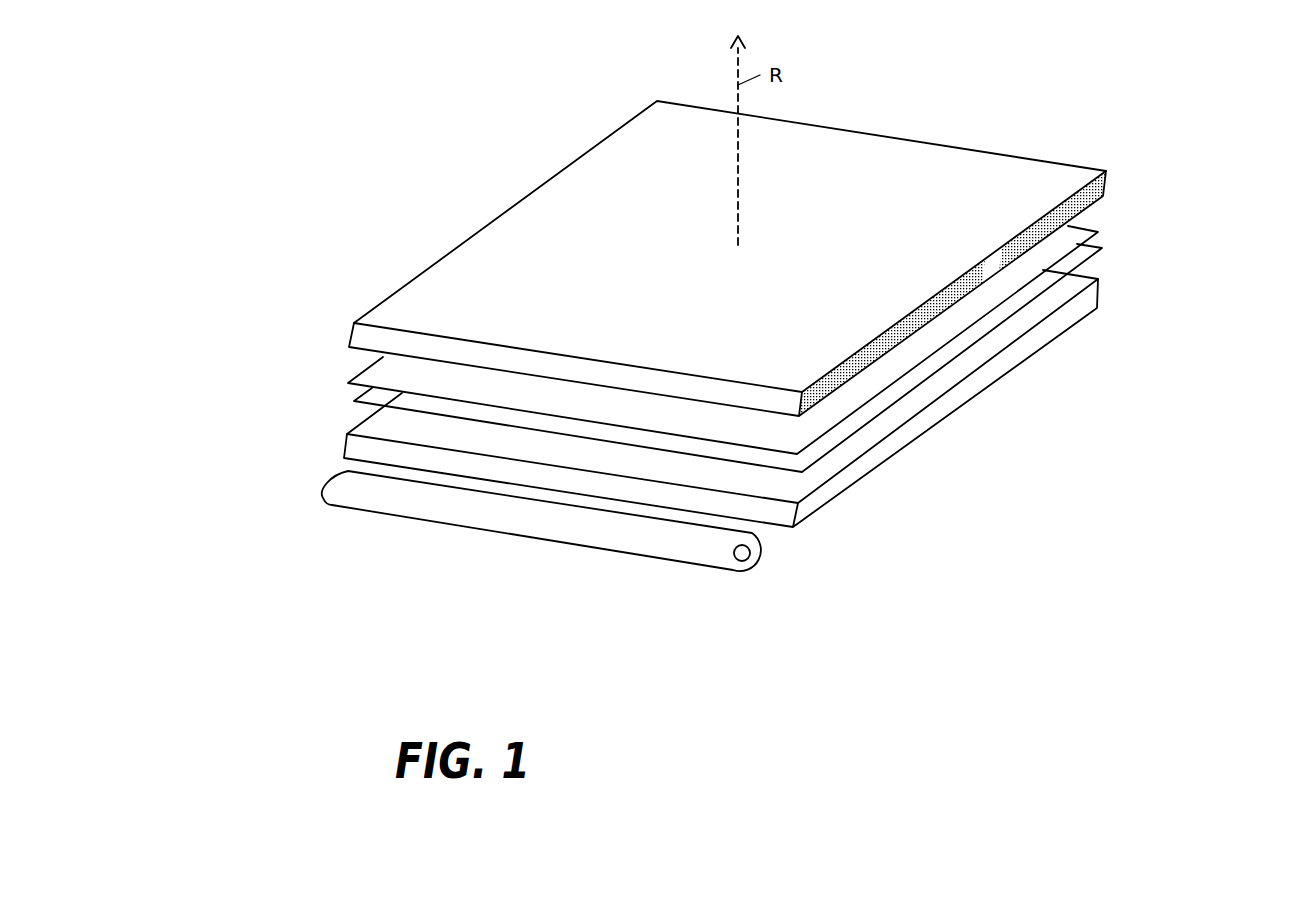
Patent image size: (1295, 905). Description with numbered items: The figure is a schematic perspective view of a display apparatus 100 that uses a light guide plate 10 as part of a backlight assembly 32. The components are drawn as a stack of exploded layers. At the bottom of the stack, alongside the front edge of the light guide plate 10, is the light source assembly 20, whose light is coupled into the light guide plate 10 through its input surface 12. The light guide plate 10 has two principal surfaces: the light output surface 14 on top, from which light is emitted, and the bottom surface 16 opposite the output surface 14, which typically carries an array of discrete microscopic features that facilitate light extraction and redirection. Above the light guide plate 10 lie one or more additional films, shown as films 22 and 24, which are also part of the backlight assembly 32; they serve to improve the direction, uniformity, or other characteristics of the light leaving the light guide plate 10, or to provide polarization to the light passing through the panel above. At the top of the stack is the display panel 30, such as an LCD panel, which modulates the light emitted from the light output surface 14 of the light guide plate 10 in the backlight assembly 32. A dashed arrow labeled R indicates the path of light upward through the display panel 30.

The display apparatus 100 is at (305, 128).
The display panel 30 is at (1110, 178).
The backlight assembly 32 is at (821, 336).
The film 24 is at (1100, 233).
The film 22 is at (769, 358).
The light guide plate 10 is at (748, 437).
The input surface 12 is at (763, 510).
The light output surface 14 is at (1096, 282).
The bottom surface 16 is at (820, 510).
The light source assembly 20 is at (533, 528).